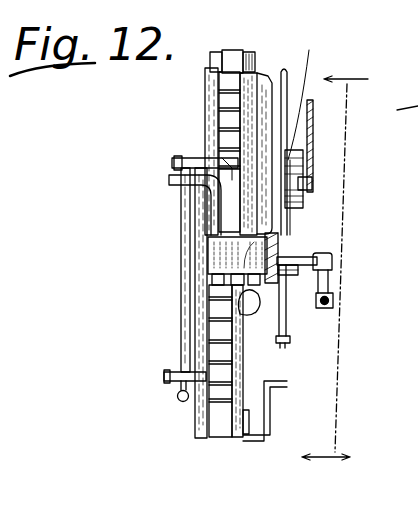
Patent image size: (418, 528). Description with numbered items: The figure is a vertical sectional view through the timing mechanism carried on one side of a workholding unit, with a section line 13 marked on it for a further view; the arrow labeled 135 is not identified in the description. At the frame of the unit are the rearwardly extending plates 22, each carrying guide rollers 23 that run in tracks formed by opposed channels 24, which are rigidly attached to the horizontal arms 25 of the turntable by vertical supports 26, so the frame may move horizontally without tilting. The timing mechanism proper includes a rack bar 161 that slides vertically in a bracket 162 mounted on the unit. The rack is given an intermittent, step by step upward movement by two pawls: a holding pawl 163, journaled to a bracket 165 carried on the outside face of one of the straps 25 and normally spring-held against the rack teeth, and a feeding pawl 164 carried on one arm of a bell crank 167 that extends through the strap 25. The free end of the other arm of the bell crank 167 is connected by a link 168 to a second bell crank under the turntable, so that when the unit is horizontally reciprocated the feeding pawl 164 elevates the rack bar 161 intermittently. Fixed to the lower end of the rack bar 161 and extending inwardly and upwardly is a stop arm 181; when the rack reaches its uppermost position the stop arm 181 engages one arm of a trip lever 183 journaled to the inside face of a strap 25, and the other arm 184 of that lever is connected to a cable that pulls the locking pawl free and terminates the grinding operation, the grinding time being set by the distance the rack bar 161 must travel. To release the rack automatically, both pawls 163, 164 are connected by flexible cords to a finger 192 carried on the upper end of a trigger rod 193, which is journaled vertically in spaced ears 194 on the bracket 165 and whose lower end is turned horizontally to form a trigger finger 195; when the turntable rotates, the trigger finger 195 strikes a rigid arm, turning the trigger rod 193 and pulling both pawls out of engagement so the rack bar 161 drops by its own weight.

The section line 13 is at (335, 270).
The plate 22 is at (313, 138).
The guide roller 23 is at (308, 130).
The channel 24 is at (306, 200).
The horizontal arm 25 is at (274, 241).
The vertical support 26 is at (284, 68).
The direction of movement 135 is at (300, 362).
The rack bar 161 is at (215, 430).
The bracket 162 is at (207, 70).
The holding pawl 163 is at (223, 130).
The feeding pawl 164 is at (182, 204).
The bracket 165 is at (210, 247).
The bell crank 167 is at (240, 314).
The link 168 is at (333, 300).
The stop arm 181 is at (272, 403).
The trip lever 183 is at (353, 246).
The arm 184 is at (285, 312).
The finger 192 is at (213, 160).
The trigger rod 193 is at (187, 332).
The ear 194 is at (172, 181).
The trigger finger 195 is at (179, 400).